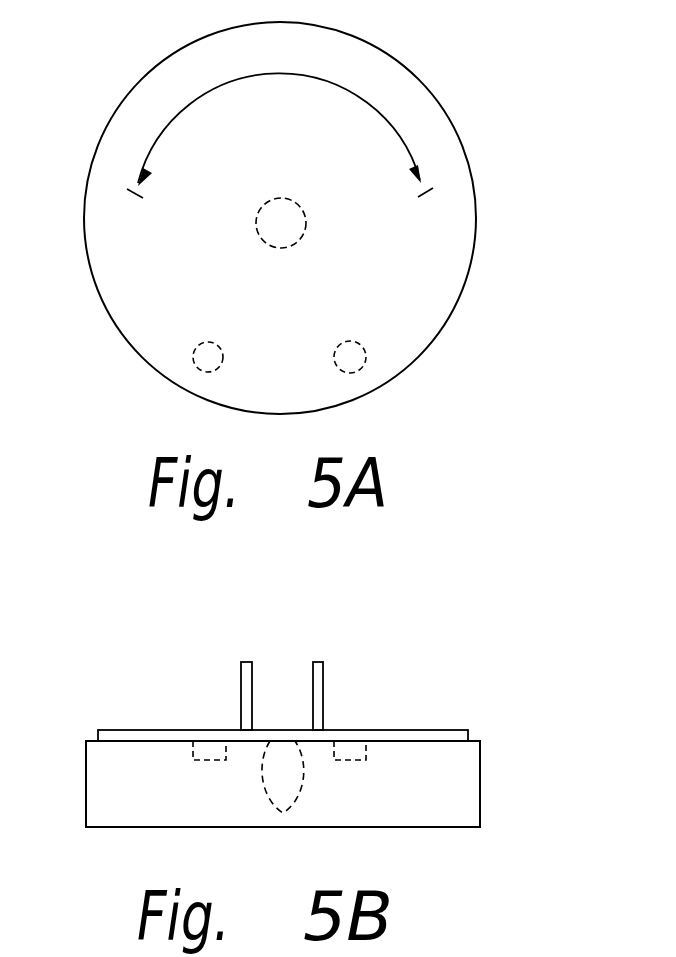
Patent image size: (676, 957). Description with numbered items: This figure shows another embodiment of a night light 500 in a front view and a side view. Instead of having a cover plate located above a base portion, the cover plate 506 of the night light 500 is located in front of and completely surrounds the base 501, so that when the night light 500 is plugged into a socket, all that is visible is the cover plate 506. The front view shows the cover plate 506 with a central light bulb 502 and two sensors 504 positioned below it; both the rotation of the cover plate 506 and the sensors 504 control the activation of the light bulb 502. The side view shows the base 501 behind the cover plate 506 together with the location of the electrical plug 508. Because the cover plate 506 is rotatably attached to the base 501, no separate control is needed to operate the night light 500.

In FIG. 5A, the night light 500 is at (586, 288).
In FIG. 5A, the base 501 is at (126, 90).
In FIG. 5B, the base 501 is at (116, 730).
In FIG. 5A, the light bulb 502 is at (303, 233).
In FIG. 5B, the light bulb 502 is at (288, 805).
In FIG. 5A, the sensors 504 is at (334, 347).
In FIG. 5B, the sensors 504 is at (210, 762).
In FIG. 5A, the cover plate 506 is at (110, 237).
In FIG. 5B, the cover plate 506 is at (481, 762).
In FIG. 5B, the electrical plug 508 is at (324, 700).